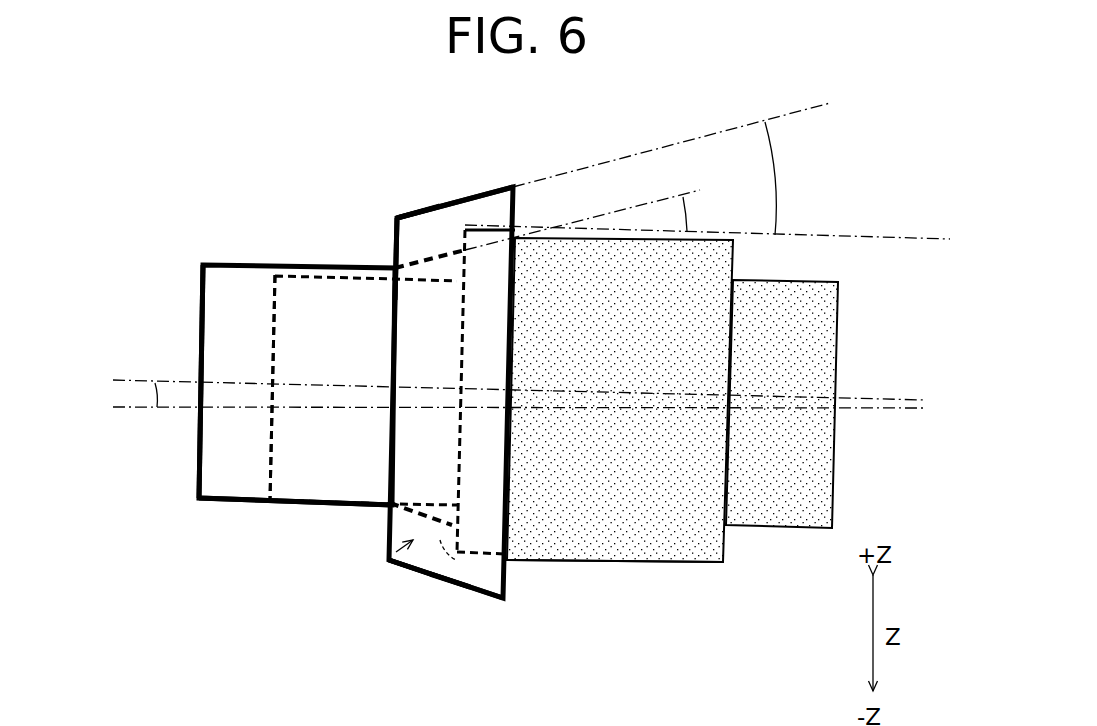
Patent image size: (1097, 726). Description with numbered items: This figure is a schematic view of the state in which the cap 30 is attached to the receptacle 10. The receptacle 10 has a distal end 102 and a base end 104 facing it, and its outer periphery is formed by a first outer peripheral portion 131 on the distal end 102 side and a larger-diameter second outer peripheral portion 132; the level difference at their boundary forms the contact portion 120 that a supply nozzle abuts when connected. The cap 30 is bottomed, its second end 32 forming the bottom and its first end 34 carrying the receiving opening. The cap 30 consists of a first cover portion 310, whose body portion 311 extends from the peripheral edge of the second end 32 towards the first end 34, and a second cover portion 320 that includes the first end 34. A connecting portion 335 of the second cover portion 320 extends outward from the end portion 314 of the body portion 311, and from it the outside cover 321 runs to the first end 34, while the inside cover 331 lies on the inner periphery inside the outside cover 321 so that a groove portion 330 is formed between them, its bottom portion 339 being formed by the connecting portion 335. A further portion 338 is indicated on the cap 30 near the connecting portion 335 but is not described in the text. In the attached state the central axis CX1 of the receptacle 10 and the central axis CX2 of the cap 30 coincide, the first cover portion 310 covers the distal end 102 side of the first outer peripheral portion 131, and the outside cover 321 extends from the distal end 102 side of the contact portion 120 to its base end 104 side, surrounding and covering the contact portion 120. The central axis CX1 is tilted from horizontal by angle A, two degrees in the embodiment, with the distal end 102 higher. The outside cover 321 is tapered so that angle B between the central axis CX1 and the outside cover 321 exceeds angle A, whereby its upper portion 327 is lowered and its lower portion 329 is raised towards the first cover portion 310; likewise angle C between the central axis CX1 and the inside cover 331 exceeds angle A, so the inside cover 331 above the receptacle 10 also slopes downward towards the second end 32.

The receptacle 10 is at (620, 454).
The cap 30 is at (343, 408).
The second end 32 is at (200, 297).
The first end 34 is at (513, 520).
The distal end 102 is at (265, 450).
The base end 104 is at (840, 315).
The contact portion 120 is at (447, 550).
The first outer peripheral portion 131 is at (285, 503).
The second outer peripheral portion 132 is at (600, 563).
The first cover portion 310 is at (285, 379).
The body portion 311 is at (282, 263).
The end portion 314 is at (392, 265).
The second cover portion 320 is at (433, 408).
The outside cover 321 is at (420, 573).
The upper portion 327 is at (478, 186).
The lower portion 329 is at (442, 583).
The groove portion 330 is at (385, 562).
The inside cover 331 is at (388, 532).
The connecting portion 335 is at (393, 240).
The upper end portion 338 is at (417, 213).
The bottom portion 339 is at (421, 514).
The angle A is at (143, 395).
The angle B is at (671, 169).
The angle C is at (585, 220).
The central axis CX1 is at (187, 380).
The central axis CX2 is at (519, 407).